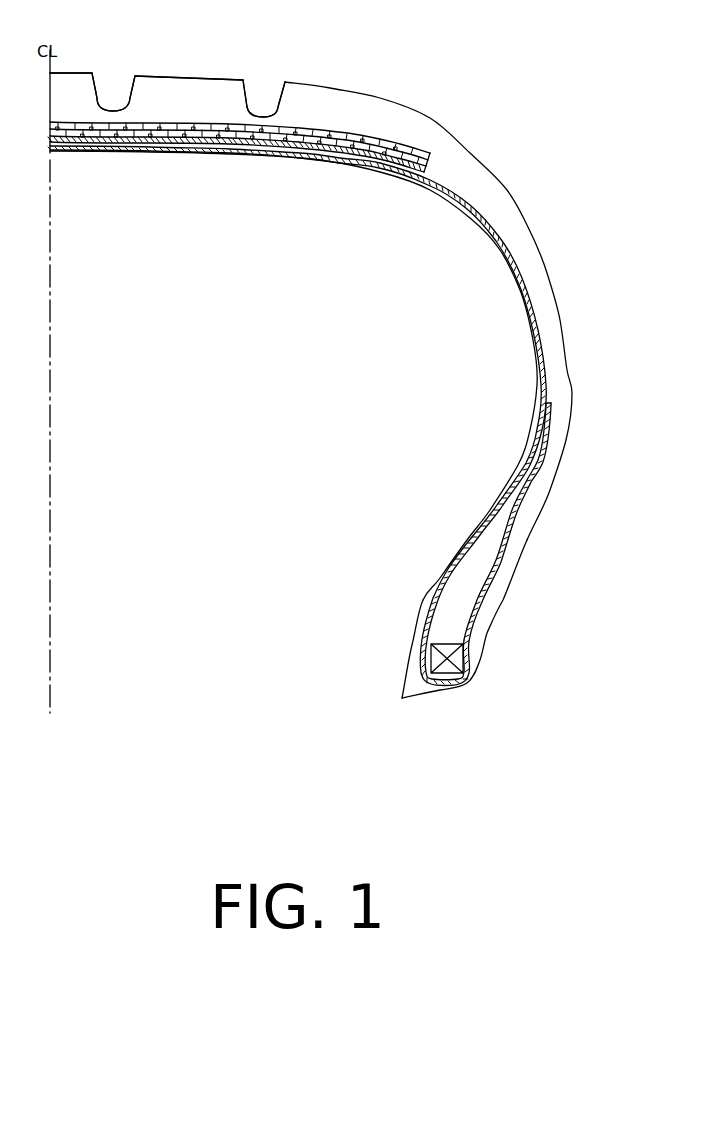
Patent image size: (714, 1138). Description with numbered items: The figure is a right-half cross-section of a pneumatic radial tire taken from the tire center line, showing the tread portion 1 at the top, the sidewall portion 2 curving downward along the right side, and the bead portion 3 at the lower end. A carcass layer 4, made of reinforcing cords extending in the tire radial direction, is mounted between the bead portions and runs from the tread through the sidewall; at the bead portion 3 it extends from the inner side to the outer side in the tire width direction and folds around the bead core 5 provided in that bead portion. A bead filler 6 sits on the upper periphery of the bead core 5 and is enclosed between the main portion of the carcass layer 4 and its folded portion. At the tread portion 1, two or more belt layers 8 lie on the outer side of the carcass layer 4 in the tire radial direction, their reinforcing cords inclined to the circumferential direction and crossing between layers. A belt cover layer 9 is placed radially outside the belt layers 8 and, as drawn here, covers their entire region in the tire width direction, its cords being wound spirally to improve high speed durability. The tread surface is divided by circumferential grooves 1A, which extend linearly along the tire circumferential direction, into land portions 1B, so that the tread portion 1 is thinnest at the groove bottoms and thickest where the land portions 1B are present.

The tread portion 1 is at (225, 75).
The circumferential groove 1A is at (98, 95).
The land portion 1B is at (70, 83).
The sidewall portion 2 is at (552, 490).
The bead portion 3 is at (485, 660).
The carcass layer 4 is at (523, 273).
The bead core 5 is at (440, 657).
The bead filler 6 is at (455, 590).
The belt layer 8 is at (193, 133).
The belt cover layer 9 is at (292, 127).